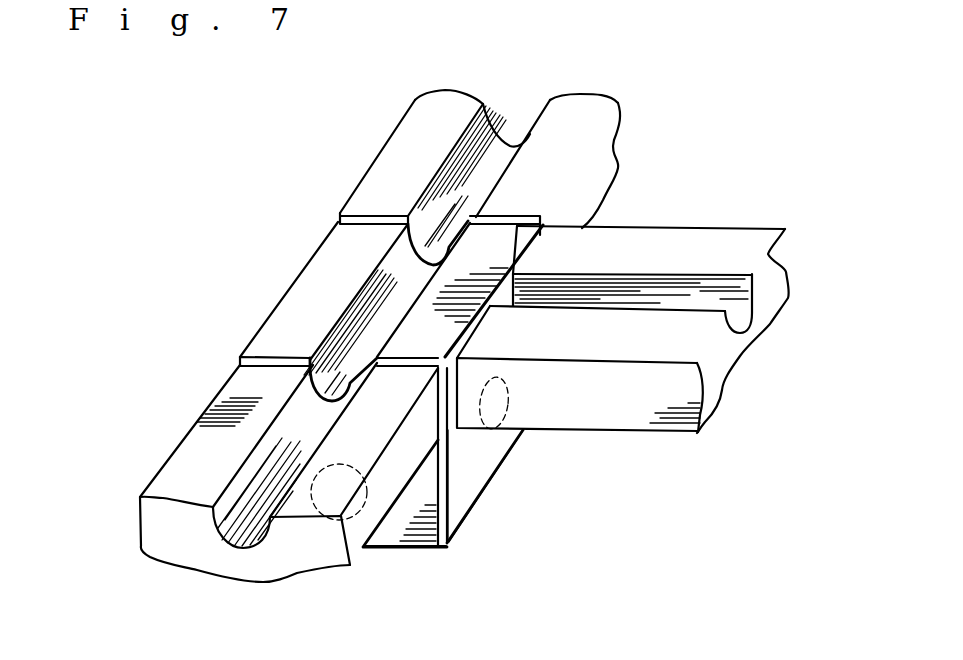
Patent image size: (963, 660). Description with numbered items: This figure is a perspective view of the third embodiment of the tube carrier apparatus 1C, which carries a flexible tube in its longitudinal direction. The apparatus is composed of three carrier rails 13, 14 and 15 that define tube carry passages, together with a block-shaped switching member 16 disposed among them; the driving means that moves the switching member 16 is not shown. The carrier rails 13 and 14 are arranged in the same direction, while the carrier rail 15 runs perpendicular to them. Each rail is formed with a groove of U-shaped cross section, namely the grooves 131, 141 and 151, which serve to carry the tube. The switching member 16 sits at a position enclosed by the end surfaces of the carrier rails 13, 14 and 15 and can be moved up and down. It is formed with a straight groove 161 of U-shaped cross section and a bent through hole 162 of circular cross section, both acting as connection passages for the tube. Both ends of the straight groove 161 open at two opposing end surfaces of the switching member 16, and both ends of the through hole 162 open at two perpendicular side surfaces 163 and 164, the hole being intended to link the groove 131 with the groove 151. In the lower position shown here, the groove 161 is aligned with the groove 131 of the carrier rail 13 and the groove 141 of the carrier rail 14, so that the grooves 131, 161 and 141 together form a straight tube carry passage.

The tube carrier apparatus 1C is at (158, 226).
The carrier rail 13 is at (208, 450).
The groove 131 is at (233, 543).
The carrier rail 14 is at (392, 167).
The groove 141 is at (495, 157).
The carrier rail 15 is at (632, 402).
The groove 151 is at (725, 293).
The switching member 16 is at (293, 318).
The straight groove 161 is at (380, 311).
The bent through hole 162 is at (518, 447).
The side surface 163 is at (405, 527).
The side surface 164 is at (465, 485).